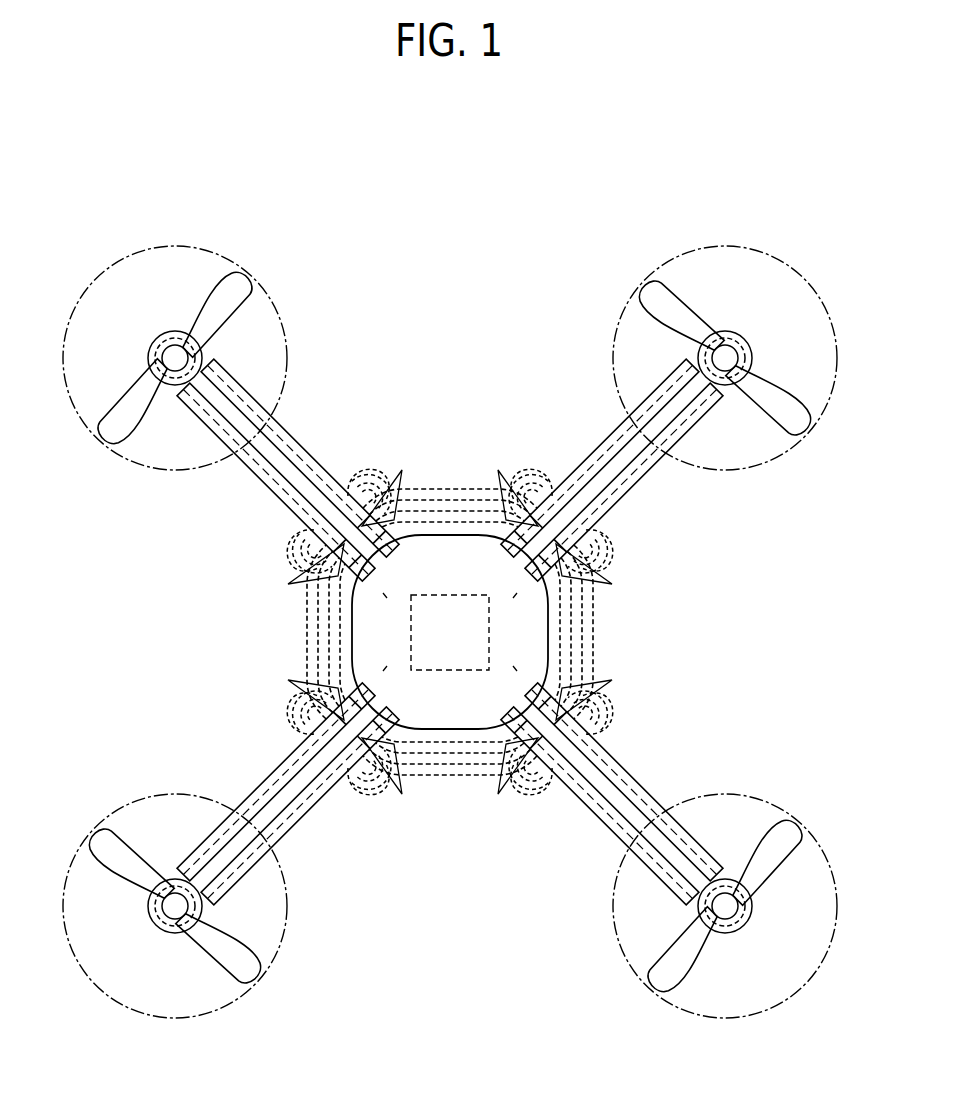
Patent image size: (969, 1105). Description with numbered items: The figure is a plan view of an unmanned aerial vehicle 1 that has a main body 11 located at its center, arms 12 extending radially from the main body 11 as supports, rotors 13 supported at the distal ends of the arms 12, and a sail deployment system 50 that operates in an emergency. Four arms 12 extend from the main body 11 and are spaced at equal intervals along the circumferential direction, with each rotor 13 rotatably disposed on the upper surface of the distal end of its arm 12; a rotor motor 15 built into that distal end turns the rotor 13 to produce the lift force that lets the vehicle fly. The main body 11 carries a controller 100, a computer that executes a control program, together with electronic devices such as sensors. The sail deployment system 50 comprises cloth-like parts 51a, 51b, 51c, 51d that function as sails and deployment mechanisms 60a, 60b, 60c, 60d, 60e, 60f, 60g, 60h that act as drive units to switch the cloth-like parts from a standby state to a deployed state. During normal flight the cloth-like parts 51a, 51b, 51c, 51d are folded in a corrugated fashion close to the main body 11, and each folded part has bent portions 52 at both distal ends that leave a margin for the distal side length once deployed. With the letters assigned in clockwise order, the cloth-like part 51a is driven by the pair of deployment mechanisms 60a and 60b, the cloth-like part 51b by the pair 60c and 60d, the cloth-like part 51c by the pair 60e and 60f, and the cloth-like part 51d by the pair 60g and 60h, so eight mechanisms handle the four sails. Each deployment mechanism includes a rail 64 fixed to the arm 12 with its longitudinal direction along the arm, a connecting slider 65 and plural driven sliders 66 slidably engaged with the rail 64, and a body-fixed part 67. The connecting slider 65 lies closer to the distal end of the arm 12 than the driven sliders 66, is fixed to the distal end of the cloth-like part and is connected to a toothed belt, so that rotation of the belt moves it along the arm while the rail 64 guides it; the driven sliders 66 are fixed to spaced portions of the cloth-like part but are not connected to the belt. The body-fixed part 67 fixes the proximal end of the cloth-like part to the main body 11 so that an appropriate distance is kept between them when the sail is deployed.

The unmanned aerial vehicle 1 is at (717, 153).
The main body 11 is at (540, 614).
The arm 12 is at (200, 384).
The rotor 13 is at (252, 284).
The rotor motor 15 is at (180, 333).
The sail deployment system 50 is at (455, 298).
The cloth-like part 51a is at (306, 633).
The cloth-like part 51b is at (452, 486).
The cloth-like part 51c is at (596, 648).
The cloth-like part 51d is at (453, 778).
The bent portion 52 is at (380, 482).
The deployment mechanism 60a is at (243, 781).
The deployment mechanism 60b is at (243, 483).
The deployment mechanism 60c is at (297, 423).
The deployment mechanism 60d is at (603, 423).
The deployment mechanism 60e is at (657, 483).
The deployment mechanism 60f is at (657, 781).
The deployment mechanism 60g is at (603, 843).
The deployment mechanism 60h is at (297, 843).
The rail 64 is at (450, 632).
The connecting slider 65 is at (362, 470).
The driven slider 66 is at (450, 634).
The body-fixed part 67 is at (450, 633).
The controller 100 is at (452, 595).